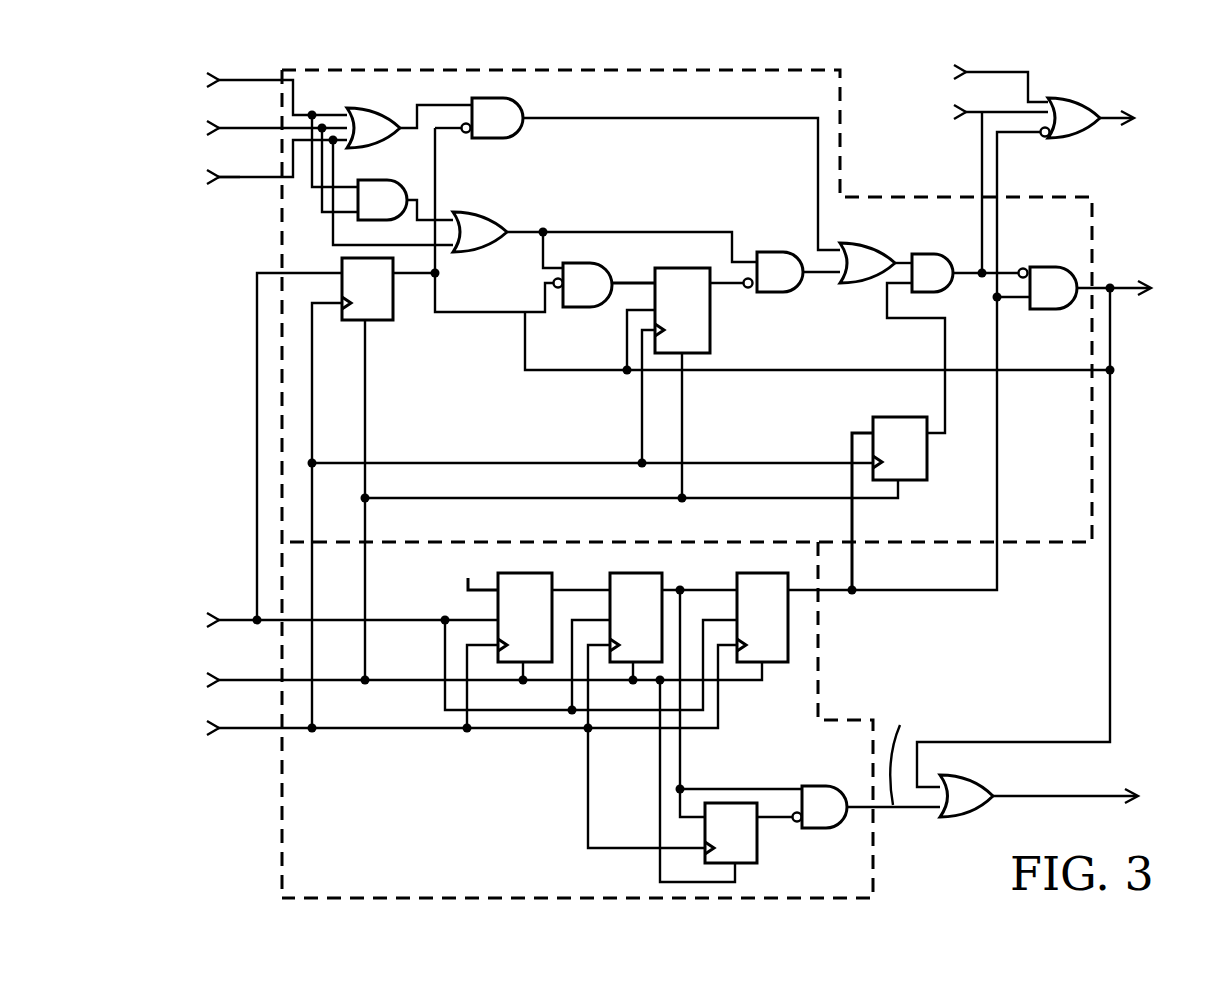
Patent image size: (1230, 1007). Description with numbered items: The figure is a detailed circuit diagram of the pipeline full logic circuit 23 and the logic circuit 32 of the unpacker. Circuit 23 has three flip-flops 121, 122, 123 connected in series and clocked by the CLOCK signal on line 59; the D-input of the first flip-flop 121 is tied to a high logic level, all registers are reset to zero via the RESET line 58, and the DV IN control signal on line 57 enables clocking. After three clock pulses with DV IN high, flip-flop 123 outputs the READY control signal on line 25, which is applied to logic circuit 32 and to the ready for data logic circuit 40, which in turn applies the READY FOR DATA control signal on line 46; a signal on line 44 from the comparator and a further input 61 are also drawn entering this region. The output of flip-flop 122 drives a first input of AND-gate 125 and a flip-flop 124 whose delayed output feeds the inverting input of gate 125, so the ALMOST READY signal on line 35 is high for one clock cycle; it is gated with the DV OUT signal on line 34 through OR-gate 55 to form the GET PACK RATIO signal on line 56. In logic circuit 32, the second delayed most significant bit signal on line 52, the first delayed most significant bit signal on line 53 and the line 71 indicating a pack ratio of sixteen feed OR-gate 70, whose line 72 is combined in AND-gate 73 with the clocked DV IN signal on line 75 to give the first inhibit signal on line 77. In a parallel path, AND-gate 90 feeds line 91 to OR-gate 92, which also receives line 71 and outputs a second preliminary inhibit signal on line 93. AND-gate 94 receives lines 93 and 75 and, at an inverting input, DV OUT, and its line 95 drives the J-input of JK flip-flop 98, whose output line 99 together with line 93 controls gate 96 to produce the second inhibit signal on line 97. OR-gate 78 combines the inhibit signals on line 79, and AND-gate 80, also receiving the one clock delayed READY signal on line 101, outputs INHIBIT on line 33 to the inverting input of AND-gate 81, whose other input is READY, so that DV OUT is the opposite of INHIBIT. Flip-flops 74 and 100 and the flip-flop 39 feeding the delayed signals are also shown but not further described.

The pipeline full logic circuit 23 is at (282, 870).
The READY control signal line 25 is at (1000, 330).
The logic circuit 32 is at (730, 74).
The INHIBIT control signal line 33 is at (965, 280).
The DV OUT control signal line 34 is at (1123, 275).
The ALMOST READY control signal line 35 is at (898, 812).
The flip-flop 39 is at (211, 192).
The ready for data logic circuit 40 is at (1080, 140).
The comparator signal line 44 is at (990, 110).
The READY FOR DATA control signal line 46 is at (1113, 125).
The MSB 2 DEL signal line 52 is at (253, 80).
The MSB 1 DEL signal line 53 is at (283, 128).
The OR-gate 55 is at (975, 785).
The GET PACK RATIO control signal line 56 is at (1055, 795).
The DV IN control signal line 57 is at (232, 618).
The RESET line 58 is at (237, 678).
The CLOCK signal line 59 is at (245, 735).
The input signal from FIG. 2 61 is at (980, 70).
The OR-gate 70 is at (358, 110).
The pack ratio signal line 71 is at (265, 188).
The OR-gate output line 72 is at (423, 105).
The AND-gate 73 is at (500, 110).
The D flip-flop 74 is at (345, 288).
The clocked DV IN signal line 75 is at (410, 277).
The INHIBIT 1 signal line 77 is at (595, 118).
The OR-gate 78 is at (860, 250).
The OR-gate output line 79 is at (887, 300).
The AND-gate 80 is at (930, 300).
The AND-gate 81 is at (1046, 265).
The AND-gate 90 is at (372, 182).
The AND-gate output line 91 is at (435, 215).
The OR-gate 92 is at (484, 216).
The INHIBIT 2A signal line 93 is at (537, 232).
The AND-gate 94 is at (585, 266).
The AND-gate output line 95 is at (632, 272).
The gate 96 is at (765, 255).
The INHIBIT 2 signal line 97 is at (885, 280).
The JK flip-flop 98 is at (712, 335).
The JK flip-flop output line 99 is at (727, 290).
The D flip-flop 100 is at (885, 417).
The delayed READY signal line 101 is at (945, 418).
The first flip-flop 121 is at (517, 573).
The second flip-flop 122 is at (635, 573).
The third flip-flop 123 is at (762, 573).
The flip-flop 124 is at (755, 840).
The AND-gate 125 is at (812, 786).